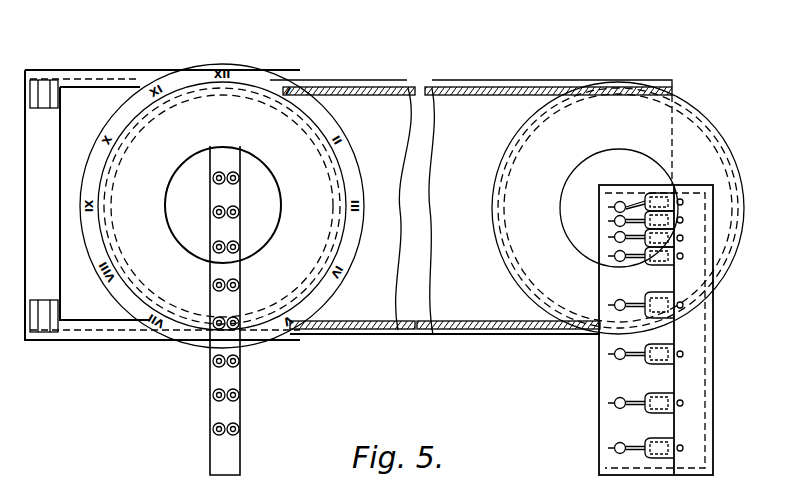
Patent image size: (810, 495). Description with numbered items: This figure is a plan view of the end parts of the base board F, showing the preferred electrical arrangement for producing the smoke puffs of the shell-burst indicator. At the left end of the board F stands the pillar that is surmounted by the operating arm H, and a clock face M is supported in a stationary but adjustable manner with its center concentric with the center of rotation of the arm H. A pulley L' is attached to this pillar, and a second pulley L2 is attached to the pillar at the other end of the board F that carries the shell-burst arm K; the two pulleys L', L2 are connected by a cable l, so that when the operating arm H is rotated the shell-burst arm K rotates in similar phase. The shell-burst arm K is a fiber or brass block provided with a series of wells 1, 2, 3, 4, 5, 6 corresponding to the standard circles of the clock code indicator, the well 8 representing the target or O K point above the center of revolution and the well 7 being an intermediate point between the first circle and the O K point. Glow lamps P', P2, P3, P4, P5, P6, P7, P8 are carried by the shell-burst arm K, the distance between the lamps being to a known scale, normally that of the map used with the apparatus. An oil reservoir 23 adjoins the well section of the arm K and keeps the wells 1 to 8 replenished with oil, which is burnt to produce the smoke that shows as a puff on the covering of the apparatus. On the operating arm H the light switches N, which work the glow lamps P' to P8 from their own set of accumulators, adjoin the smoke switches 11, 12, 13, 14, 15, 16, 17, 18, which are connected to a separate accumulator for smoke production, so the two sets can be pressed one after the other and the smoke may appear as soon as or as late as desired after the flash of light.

The well 1 is at (660, 237).
The well 2 is at (660, 255).
The well 3 is at (660, 305).
The well 4 is at (660, 354).
The well 5 is at (660, 403).
The well 6 is at (660, 448).
The intermediate point well 7 is at (660, 219).
The target point well 8 is at (658, 203).
The smoke switch 11 is at (241, 247).
The smoke switch 12 is at (241, 284).
The smoke switch 13 is at (234, 320).
The smoke switch 14 is at (242, 361).
The smoke switch 15 is at (242, 396).
The smoke switch 16 is at (242, 430).
The smoke switch 17 is at (241, 211).
The smoke switch 18 is at (241, 176).
The oil reservoir 23 is at (700, 456).
The clock face M is at (178, 88).
The pulley L' is at (222, 176).
The pulley L2 is at (574, 120).
The light switches N is at (219, 218).
The operating arm H is at (225, 447).
The base board F is at (424, 211).
The cable l is at (491, 90).
The shell-burst arm K is at (612, 463).
The glow lamp P' is at (580, 225).
The glow lamp P2 is at (614, 256).
The glow lamp P3 is at (612, 302).
The glow lamp P4 is at (608, 354).
The glow lamp P5 is at (608, 402).
The glow lamp P6 is at (608, 446).
The glow lamp P7 is at (614, 219).
The glow lamp P8 is at (614, 205).